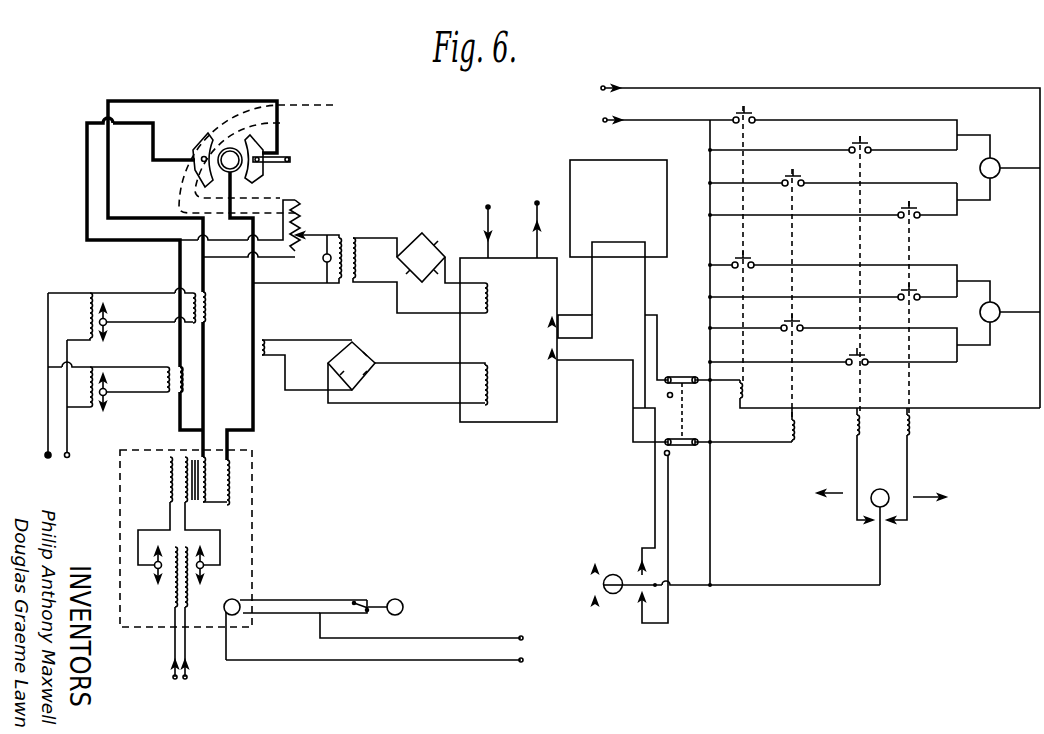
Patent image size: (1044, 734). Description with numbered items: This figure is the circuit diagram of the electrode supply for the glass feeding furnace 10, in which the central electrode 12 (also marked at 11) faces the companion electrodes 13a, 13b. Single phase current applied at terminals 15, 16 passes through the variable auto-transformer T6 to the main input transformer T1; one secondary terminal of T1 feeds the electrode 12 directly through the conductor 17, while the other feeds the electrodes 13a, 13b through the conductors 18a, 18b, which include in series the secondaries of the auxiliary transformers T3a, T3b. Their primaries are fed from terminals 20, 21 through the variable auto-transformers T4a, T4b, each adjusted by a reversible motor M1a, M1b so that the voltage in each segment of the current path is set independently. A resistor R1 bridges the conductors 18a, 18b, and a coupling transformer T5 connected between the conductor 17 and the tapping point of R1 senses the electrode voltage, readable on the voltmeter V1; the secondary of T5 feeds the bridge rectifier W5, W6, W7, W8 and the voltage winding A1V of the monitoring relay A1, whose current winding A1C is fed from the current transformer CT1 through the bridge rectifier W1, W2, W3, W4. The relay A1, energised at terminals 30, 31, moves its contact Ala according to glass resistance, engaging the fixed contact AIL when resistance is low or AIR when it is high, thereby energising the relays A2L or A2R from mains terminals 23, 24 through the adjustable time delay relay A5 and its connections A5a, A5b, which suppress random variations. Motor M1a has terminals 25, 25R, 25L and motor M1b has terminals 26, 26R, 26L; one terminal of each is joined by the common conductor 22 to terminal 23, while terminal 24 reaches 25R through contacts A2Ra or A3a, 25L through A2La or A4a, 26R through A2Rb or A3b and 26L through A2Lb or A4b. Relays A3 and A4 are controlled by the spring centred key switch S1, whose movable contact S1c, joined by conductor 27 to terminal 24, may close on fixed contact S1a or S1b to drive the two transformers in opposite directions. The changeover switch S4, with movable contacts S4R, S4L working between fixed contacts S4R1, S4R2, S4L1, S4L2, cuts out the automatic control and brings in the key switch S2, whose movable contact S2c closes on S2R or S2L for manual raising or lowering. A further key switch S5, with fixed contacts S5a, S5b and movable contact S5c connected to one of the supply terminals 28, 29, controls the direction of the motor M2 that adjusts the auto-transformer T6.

The glass feeding furnace 10 is at (330, 108).
The electrode 11 is at (236, 140).
The electrode 12 is at (233, 174).
The electrode 13a is at (195, 172).
The electrode 13b is at (258, 175).
The terminal 15 is at (172, 680).
The terminal 16 is at (188, 680).
The conductor 17 is at (254, 399).
The conductor 18a is at (128, 242).
The conductor 18b is at (190, 216).
The terminal 20 is at (45, 455).
The terminal 21 is at (70, 455).
The common conductor 22 is at (949, 92).
The terminal 23 is at (601, 88).
The terminal 24 is at (604, 122).
The motor terminal 25 is at (998, 177).
The motor terminal 25R is at (980, 167).
The motor terminal 25L is at (990, 190).
The motor terminal 26 is at (999, 319).
The motor terminal 26R is at (980, 311).
The motor terminal 26L is at (990, 334).
The conductor 27 is at (711, 522).
The supply terminal 28 is at (523, 639).
The supply terminal 29 is at (522, 662).
The terminal 30 is at (290, 158).
The terminal 31 is at (291, 163).
The resistor R1 is at (271, 228).
The voltmeter V1 is at (323, 262).
The coupling transformer T5 is at (369, 266).
The bridge circuit rectifier W5 is at (390, 230).
The bridge circuit rectifier W6 is at (440, 240).
The bridge circuit rectifier W7 is at (408, 275).
The bridge circuit rectifier W8 is at (436, 275).
The current transformer CT1 is at (305, 355).
The bridge circuit rectifier W1 is at (400, 371).
The bridge circuit rectifier W2 is at (381, 346).
The bridge circuit rectifier W3 is at (341, 380).
The bridge circuit rectifier W4 is at (382, 381).
The monitoring relay A1 is at (512, 418).
The voltage winding A1V is at (486, 314).
The current winding A1C is at (480, 410).
The fixed contact AIR is at (575, 297).
The fixed contact AIL is at (555, 352).
The movable contact Ala is at (574, 339).
The adjustable time delay relay A5 is at (641, 164).
The time delay relay contact A5a is at (645, 245).
The time delay relay contact A5b is at (648, 252).
The changeover switch S4 is at (707, 378).
The movable contact S4R is at (700, 386).
The movable contact S4L is at (686, 450).
The fixed contact S4R1 is at (665, 378).
The fixed contact S4R2 is at (666, 395).
The fixed contact S4L1 is at (665, 442).
The fixed contact S4L2 is at (664, 454).
The relay contacts A2Ra is at (752, 110).
The relay contacts A3a is at (868, 141).
The relay contacts A2La is at (798, 176).
The relay contacts A4a is at (912, 209).
The relay contacts A2Rb is at (762, 249).
The relay contacts A4b is at (910, 285).
The relay contacts A2Lb is at (791, 321).
The relay contacts A3b is at (860, 355).
The relay A2R is at (744, 393).
The relay A2L is at (796, 429).
The relay A3 is at (866, 430).
The relay A4 is at (912, 427).
The reversible electric motor M1a is at (996, 160).
The reversible electric motor M1b is at (996, 303).
The spring centred key switch S1 is at (883, 548).
The fixed contact S1a is at (866, 522).
The fixed contact S1b is at (888, 522).
The movable contact S1c is at (881, 584).
The spring centred key switch S2 is at (652, 630).
The fixed contact S2R is at (632, 572).
The fixed contact S2L is at (634, 600).
The movable contact S2c is at (624, 595).
The motor M2 is at (240, 600).
The spring centred key switch S5 is at (399, 598).
The fixed contact S5a is at (372, 588).
The fixed contact S5b is at (372, 612).
The movable contact S5c is at (352, 614).
The variable auto-transformer T4b is at (95, 283).
The variable auto-transformer T4a is at (86, 416).
The auxiliary transformer T3b is at (217, 307).
The auxiliary transformer T3a is at (168, 396).
The main input transformer T1 is at (214, 504).
The variable auto-transformer T6 is at (192, 576).